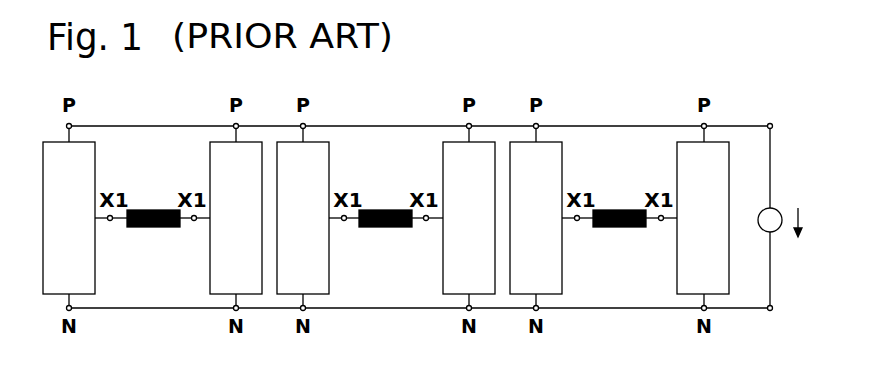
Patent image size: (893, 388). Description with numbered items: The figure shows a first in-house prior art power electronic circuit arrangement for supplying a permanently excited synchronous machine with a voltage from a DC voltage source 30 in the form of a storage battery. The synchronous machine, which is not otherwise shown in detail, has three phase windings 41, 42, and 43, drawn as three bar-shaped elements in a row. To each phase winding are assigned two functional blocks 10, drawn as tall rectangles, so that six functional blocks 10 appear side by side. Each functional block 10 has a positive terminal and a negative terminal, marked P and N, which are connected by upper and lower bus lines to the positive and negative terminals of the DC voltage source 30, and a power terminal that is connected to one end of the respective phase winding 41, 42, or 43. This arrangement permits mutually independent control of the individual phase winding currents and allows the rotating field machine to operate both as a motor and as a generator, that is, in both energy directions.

The functional block 10 is at (55, 228).
The phase winding 41 is at (152, 233).
The phase winding 42 is at (386, 233).
The phase winding 43 is at (619, 233).
The DC voltage source 30 is at (776, 229).